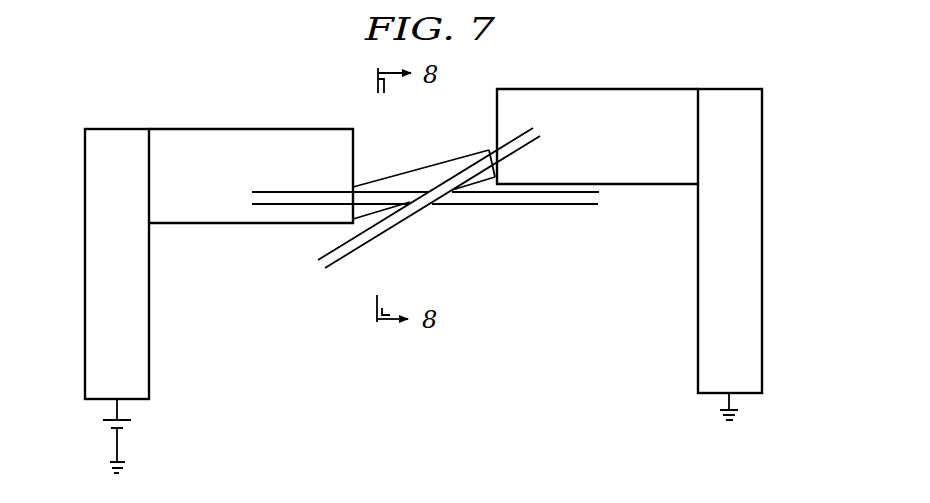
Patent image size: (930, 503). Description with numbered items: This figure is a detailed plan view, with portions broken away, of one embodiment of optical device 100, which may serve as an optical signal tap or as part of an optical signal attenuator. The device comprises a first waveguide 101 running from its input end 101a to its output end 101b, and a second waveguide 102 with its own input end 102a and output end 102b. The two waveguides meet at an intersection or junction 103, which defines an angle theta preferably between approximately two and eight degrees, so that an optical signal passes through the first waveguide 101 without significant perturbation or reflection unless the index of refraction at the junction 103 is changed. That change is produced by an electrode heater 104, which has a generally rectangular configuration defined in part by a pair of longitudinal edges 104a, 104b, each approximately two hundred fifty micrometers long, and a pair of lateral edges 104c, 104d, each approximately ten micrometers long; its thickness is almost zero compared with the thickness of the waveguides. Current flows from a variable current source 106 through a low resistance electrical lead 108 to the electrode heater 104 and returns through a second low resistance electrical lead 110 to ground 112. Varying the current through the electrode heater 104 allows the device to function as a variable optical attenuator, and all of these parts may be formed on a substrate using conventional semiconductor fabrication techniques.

The optical device 100 is at (194, 104).
The first waveguide 101 is at (433, 210).
The input end of first waveguide 101a is at (277, 196).
The output end of first waveguide 101b is at (538, 214).
The second waveguide 102 is at (429, 203).
The input end of second waveguide 102a is at (322, 264).
The output end of second waveguide 102b is at (538, 132).
The intersection or junction 103 is at (436, 211).
The electrode heater 104 is at (436, 188).
The longitudinal edge 104a is at (402, 172).
The longitudinal edge 104b is at (481, 185).
The lateral edge 104c is at (492, 147).
The lateral edge 104d is at (356, 212).
The variable current source 106 is at (103, 426).
The electrical lead 108 is at (86, 266).
The electrical lead 110 is at (759, 246).
The ground 112 is at (132, 470).